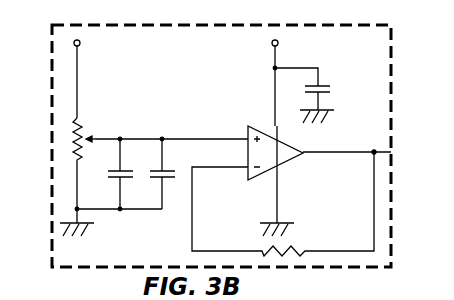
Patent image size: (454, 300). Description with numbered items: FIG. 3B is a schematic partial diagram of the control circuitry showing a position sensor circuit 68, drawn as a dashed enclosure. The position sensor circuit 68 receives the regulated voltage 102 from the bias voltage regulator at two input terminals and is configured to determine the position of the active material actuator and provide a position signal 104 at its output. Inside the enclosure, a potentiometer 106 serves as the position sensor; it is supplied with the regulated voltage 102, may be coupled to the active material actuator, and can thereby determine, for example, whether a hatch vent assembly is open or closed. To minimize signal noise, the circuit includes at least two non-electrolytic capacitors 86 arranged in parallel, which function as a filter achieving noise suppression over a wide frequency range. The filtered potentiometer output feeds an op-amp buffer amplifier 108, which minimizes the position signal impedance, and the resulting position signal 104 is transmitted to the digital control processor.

The position sensor circuit 68 is at (58, 268).
The regulated voltage 102 is at (81, 43).
The position signal 104 is at (375, 150).
The potentiometer 106 is at (84, 119).
The op-amp buffer amplifier 108 is at (266, 130).
The non-electrolytic capacitors 86 is at (161, 168).